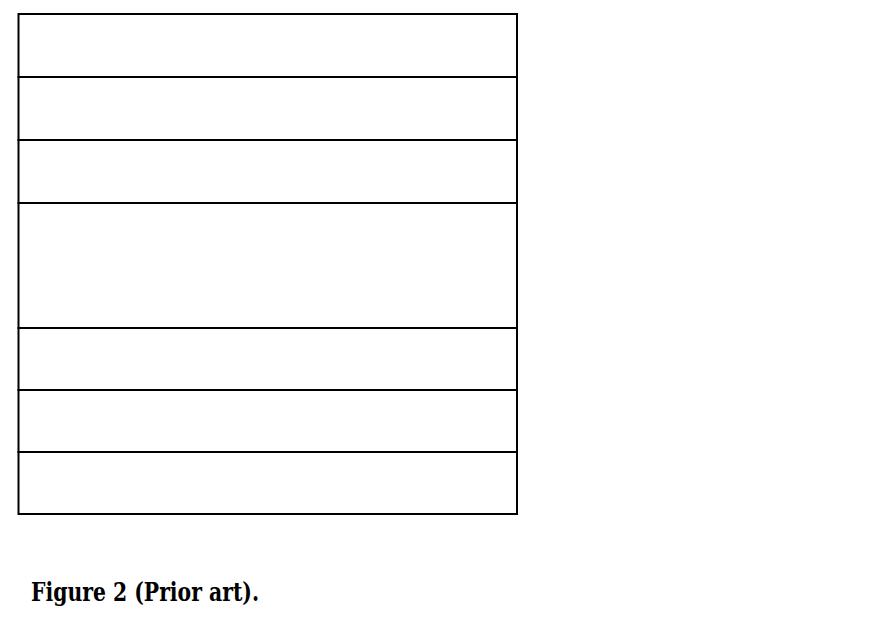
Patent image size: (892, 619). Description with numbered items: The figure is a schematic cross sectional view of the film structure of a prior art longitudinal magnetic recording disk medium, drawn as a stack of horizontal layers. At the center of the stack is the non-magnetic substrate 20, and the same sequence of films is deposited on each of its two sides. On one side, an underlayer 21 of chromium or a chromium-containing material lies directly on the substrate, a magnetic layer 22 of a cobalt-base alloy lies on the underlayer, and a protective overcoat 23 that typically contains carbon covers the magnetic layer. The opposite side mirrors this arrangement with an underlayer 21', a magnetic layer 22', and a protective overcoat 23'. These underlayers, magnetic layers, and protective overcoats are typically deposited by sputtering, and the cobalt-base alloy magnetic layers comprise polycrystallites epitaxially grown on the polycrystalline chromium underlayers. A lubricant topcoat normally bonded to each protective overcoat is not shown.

The protective overcoat 23 is at (436, 45).
The magnetic layer 22 is at (413, 108).
The underlayer 21 is at (392, 171).
The non-magnetic substrate 20 is at (382, 265).
The underlayer 21' is at (396, 359).
The magnetic layer 22' is at (416, 421).
The protective overcoat 23' is at (441, 483).